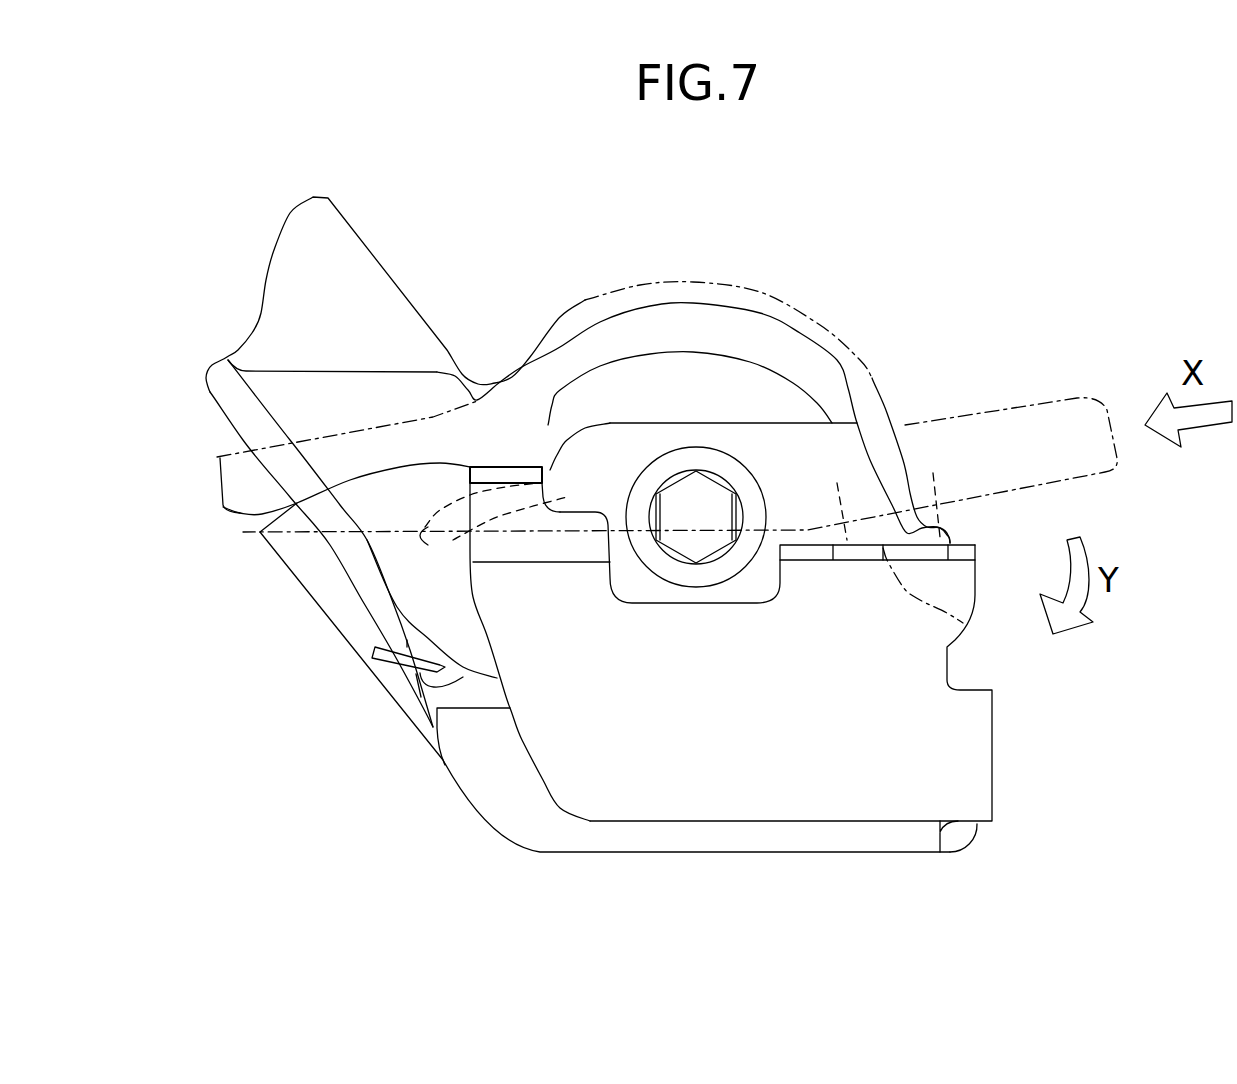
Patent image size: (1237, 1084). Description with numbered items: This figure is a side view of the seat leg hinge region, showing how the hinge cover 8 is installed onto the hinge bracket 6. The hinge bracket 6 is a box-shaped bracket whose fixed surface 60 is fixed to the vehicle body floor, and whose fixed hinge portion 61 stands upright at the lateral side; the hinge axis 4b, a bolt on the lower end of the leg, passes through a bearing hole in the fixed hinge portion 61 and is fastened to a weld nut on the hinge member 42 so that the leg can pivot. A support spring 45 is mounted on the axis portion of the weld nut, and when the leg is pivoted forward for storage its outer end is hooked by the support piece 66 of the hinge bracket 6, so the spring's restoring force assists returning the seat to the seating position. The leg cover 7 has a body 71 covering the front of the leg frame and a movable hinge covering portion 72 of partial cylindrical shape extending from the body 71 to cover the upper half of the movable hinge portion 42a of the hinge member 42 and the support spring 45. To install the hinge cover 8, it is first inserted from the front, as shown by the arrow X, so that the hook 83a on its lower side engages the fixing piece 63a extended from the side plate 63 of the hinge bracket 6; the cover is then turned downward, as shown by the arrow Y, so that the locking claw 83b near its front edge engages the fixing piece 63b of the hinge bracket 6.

The leg cover 7 is at (395, 285).
The body 71 is at (384, 244).
The hinge cover 8 is at (702, 280).
The movable hinge covering portion 72 is at (773, 310).
The movable hinge portion 42a is at (772, 392).
The fixed hinge portion 61 is at (810, 423).
The hinge axis 4b is at (697, 547).
The hinge member 42 is at (248, 410).
The fixing piece 63a is at (232, 512).
The side plate 63 is at (632, 802).
The fixing piece 63b is at (947, 533).
The hook 83a is at (418, 545).
The locking claw 83b is at (963, 622).
The support piece 66 is at (363, 628).
The support spring 45 is at (397, 697).
The fixed surface 60 is at (741, 855).
The hinge bracket 6 is at (986, 848).